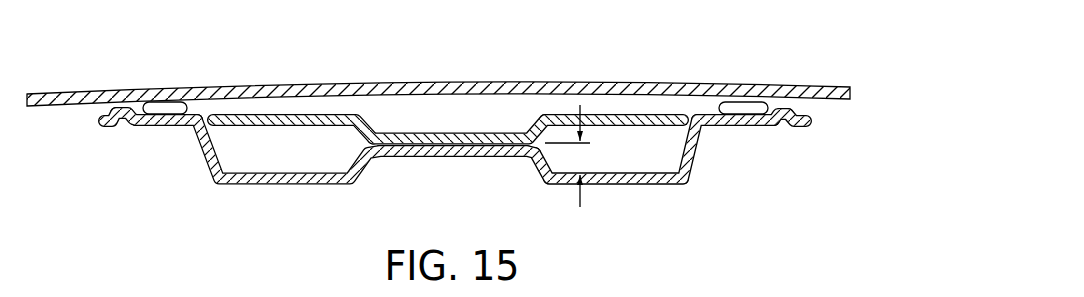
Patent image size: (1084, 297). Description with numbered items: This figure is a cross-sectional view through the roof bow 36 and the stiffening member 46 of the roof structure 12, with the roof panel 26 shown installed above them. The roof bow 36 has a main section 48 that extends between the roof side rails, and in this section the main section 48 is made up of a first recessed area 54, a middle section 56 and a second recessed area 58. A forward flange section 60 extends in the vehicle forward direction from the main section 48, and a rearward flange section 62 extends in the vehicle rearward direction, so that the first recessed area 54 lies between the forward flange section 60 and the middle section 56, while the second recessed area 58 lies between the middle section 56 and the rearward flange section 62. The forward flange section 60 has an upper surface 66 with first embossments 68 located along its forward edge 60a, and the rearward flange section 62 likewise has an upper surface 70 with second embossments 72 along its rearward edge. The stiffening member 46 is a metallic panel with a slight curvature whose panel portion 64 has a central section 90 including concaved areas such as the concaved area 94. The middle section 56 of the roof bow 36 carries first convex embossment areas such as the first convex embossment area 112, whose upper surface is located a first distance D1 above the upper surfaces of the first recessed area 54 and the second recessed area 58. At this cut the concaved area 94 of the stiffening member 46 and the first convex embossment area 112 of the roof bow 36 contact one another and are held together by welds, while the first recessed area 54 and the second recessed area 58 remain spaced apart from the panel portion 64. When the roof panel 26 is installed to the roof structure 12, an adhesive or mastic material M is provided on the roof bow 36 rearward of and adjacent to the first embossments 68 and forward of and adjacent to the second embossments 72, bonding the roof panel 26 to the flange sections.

The roof structure 12 is at (615, 55).
The roof panel 26 is at (508, 81).
The roof bow 36 is at (428, 132).
The stiffening member 46 is at (448, 87).
The main section 48 is at (565, 187).
The first recessed area 54 is at (257, 187).
The middle section 56 is at (480, 158).
The second recessed area 58 is at (631, 188).
The forward flange section 60 is at (157, 128).
The forward edge 60a is at (97, 118).
The rearward flange section 62 is at (748, 127).
The panel portion 64 is at (257, 113).
The upper surface 66 is at (156, 113).
The first embossments 68 is at (119, 109).
The upper surface 70 is at (748, 113).
The second embossments 72 is at (787, 113).
The central section 90 is at (553, 113).
The concaved area 94 is at (448, 132).
The first convex embossment area 112 is at (423, 158).
The adhesive or mastic material M is at (178, 106).
The first distance D1 is at (568, 156).